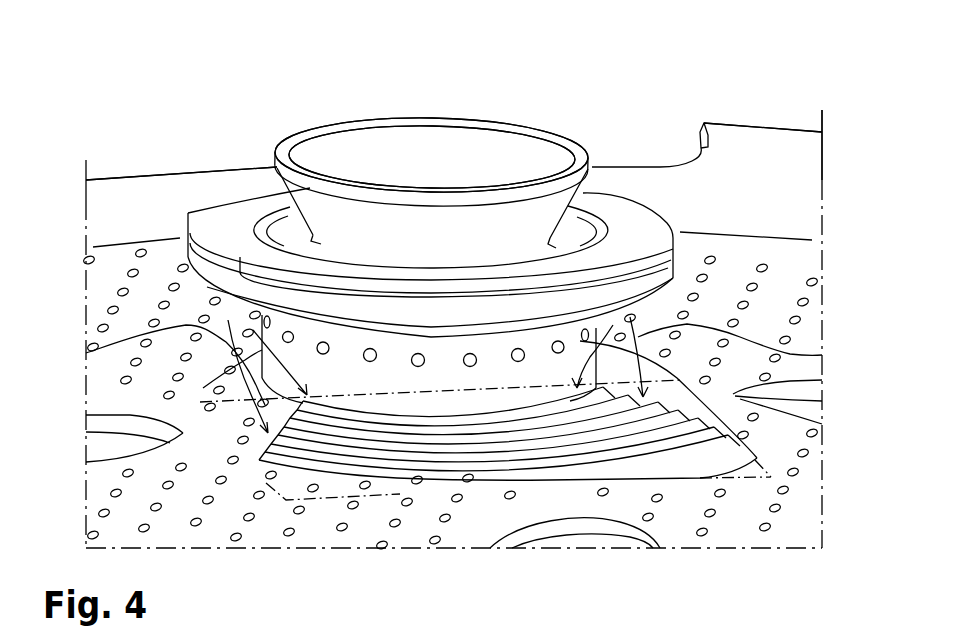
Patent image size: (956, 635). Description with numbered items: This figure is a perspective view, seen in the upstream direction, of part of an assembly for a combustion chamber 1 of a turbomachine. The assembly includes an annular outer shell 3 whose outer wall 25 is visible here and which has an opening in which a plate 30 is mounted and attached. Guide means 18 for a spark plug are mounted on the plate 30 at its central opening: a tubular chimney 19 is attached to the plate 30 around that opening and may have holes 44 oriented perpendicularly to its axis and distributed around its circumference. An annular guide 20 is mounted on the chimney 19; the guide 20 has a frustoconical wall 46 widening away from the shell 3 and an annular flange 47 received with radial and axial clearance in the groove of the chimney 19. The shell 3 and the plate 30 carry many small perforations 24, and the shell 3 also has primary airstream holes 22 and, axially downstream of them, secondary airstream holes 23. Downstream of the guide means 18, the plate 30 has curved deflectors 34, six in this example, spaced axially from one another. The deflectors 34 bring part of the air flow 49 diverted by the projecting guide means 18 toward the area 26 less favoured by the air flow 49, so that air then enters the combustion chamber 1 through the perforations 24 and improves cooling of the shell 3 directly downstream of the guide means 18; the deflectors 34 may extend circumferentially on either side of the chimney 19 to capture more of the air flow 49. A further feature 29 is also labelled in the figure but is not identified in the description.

The combustion chamber 1 is at (748, 80).
The outer shell 3 is at (137, 197).
The outer wall 25 is at (137, 197).
The guide means 18 is at (560, 108).
The tubular chimney 19 is at (196, 259).
The annular guide 20 is at (365, 118).
The primary airstream holes 22 is at (114, 450).
The secondary airstream holes 23 is at (565, 546).
The perforations 24 is at (113, 310).
The area less favoured by the air flow 26 is at (285, 472).
The flow 29 is at (186, 363).
The plate 30 is at (203, 388).
The curved deflectors 34 is at (413, 453).
The holes 44 is at (473, 358).
The frustoconical wall 46 is at (443, 143).
The annular flange 47 is at (285, 228).
The air flow 49 is at (262, 342).